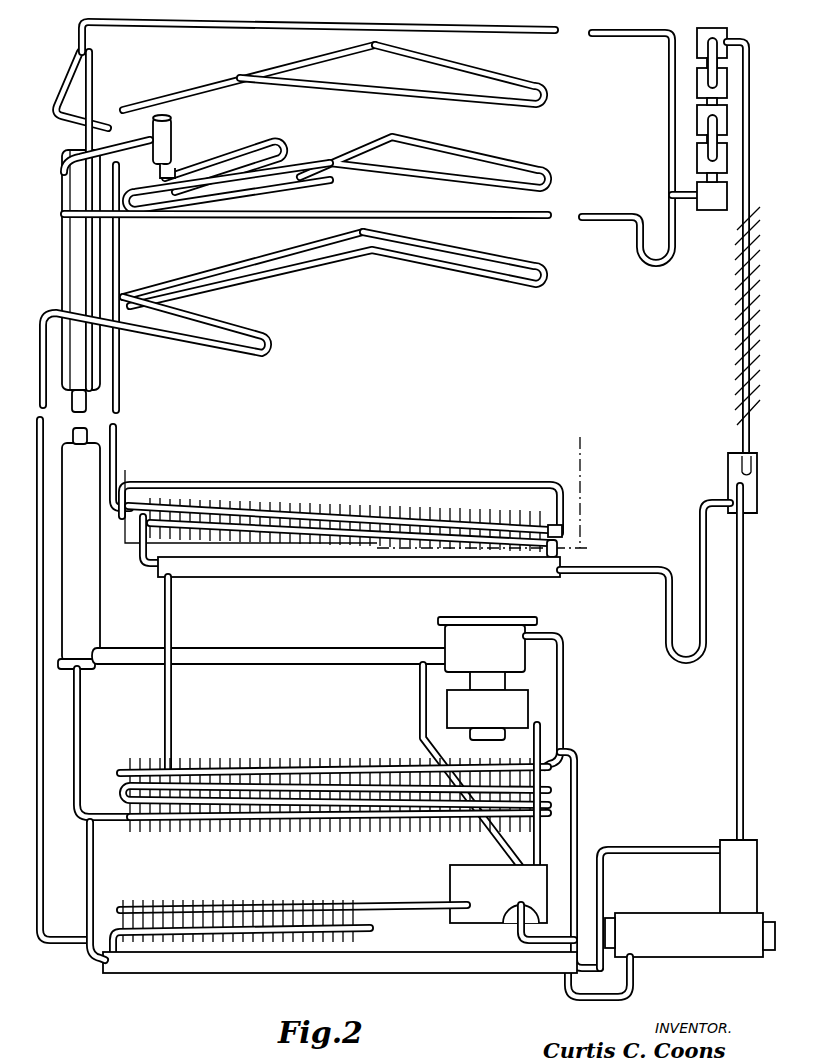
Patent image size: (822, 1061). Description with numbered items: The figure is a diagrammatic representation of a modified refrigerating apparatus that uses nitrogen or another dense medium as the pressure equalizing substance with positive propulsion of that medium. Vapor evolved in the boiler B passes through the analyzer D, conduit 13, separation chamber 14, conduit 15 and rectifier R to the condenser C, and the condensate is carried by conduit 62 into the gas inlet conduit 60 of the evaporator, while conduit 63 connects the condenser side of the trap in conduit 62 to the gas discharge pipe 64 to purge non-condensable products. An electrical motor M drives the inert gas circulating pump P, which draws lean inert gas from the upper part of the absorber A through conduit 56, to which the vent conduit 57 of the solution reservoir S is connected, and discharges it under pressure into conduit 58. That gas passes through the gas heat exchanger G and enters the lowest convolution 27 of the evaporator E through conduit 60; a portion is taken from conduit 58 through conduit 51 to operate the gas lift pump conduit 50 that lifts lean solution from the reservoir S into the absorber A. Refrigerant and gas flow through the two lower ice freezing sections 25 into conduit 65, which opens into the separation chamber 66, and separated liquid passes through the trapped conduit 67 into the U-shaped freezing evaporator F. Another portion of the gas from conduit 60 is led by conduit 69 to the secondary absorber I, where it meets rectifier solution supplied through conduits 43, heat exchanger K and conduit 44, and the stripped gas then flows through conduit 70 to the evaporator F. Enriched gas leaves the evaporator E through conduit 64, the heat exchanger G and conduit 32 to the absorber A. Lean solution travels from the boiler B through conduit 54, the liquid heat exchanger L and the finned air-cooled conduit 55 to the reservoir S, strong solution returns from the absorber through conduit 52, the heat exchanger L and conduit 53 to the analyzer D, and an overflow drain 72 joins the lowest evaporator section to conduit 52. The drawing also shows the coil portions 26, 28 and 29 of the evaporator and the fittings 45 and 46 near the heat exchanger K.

The conduit 13 is at (745, 742).
The separation chamber 14 is at (757, 488).
The conduit 15 is at (746, 412).
The ice freezing sections 25 is at (355, 175).
The heating coil loop 26' 26 is at (322, 180).
The lowest convolution 27 is at (440, 272).
The bottom heating coil hairpin 28' 28 is at (195, 335).
The heater connecting tubes 29' 29 is at (236, 76).
The conduit 32 is at (80, 712).
The conduit 43 is at (703, 556).
The conduit 44 is at (150, 568).
The fitting 45' 45 is at (575, 548).
The pipe from header to evaporator 46' 46 is at (172, 714).
The gas lift pump conduit 50 is at (580, 832).
The conduit 51 is at (420, 728).
The conduit 52 is at (90, 878).
The conduit 53 is at (640, 848).
The conduit 54 is at (580, 990).
The finned air-cooled conduit 55 is at (382, 908).
The conduit 56 is at (566, 706).
The vent conduit 57 is at (539, 838).
The conduit 58 is at (326, 656).
The gas inlet conduit 60 is at (118, 178).
The conduit 62 is at (504, 218).
The conduit 63 is at (604, 30).
The gas discharge pipe 64 is at (76, 72).
The conduit 65 is at (104, 160).
The separation chamber 66 is at (168, 118).
The trapped conduit 67 is at (160, 172).
The conduit 69 is at (366, 486).
The conduit 70 is at (122, 436).
The overflow drain 72 is at (38, 600).
The air-cooled absorber A is at (246, 762).
The boiler B is at (690, 935).
The condenser C is at (700, 32).
The analyzer D is at (738, 880).
The primary evaporator E is at (546, 88).
The low temperature freezing evaporator F is at (340, 140).
The gas heat exchanger G is at (79, 548).
The secondary air-cooled absorber I is at (484, 526).
The secondary liquid heat exchanger K is at (398, 578).
The liquid heat exchanger L is at (418, 954).
The electrical motor M is at (487, 715).
The inert gas circulating pump P is at (487, 653).
The rectifier R is at (754, 318).
The solution reservoir S is at (512, 902).